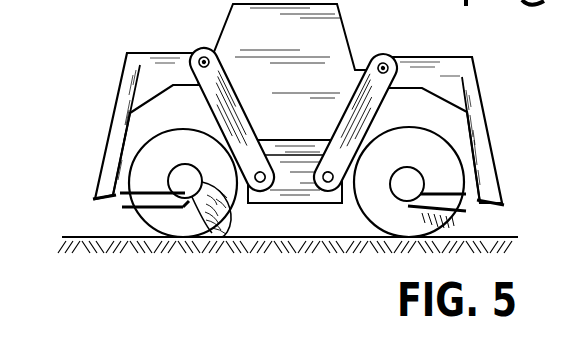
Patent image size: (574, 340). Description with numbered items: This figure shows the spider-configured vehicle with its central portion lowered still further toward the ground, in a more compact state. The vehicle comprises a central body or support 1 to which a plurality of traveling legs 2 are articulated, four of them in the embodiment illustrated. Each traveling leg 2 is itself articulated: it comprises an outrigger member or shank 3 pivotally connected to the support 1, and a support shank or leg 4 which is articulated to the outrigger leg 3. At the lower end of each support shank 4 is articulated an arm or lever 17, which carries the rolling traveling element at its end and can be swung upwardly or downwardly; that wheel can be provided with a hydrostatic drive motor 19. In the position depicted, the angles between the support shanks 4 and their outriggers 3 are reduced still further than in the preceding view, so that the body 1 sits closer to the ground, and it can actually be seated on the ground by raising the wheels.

The support 1 is at (305, 190).
The traveling legs 2 is at (191, 105).
The outrigger member or shank 3 is at (374, 108).
The support shank or leg 4 is at (490, 158).
The arm or lever 17 is at (160, 203).
The hydrostatic drive motor 19 is at (212, 183).